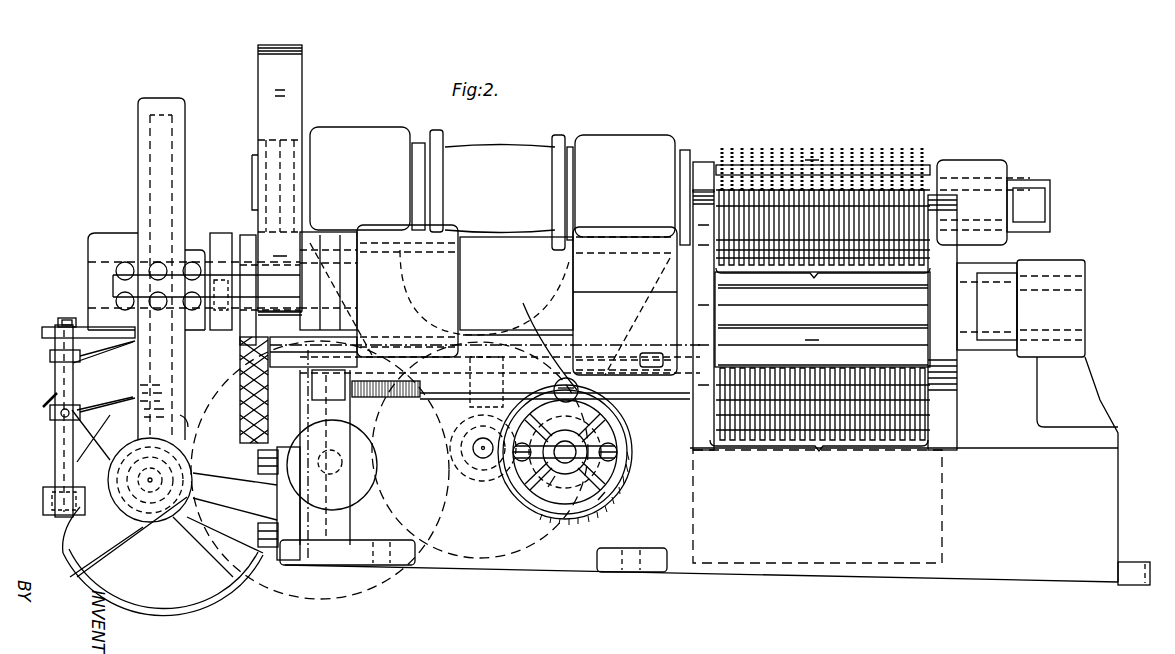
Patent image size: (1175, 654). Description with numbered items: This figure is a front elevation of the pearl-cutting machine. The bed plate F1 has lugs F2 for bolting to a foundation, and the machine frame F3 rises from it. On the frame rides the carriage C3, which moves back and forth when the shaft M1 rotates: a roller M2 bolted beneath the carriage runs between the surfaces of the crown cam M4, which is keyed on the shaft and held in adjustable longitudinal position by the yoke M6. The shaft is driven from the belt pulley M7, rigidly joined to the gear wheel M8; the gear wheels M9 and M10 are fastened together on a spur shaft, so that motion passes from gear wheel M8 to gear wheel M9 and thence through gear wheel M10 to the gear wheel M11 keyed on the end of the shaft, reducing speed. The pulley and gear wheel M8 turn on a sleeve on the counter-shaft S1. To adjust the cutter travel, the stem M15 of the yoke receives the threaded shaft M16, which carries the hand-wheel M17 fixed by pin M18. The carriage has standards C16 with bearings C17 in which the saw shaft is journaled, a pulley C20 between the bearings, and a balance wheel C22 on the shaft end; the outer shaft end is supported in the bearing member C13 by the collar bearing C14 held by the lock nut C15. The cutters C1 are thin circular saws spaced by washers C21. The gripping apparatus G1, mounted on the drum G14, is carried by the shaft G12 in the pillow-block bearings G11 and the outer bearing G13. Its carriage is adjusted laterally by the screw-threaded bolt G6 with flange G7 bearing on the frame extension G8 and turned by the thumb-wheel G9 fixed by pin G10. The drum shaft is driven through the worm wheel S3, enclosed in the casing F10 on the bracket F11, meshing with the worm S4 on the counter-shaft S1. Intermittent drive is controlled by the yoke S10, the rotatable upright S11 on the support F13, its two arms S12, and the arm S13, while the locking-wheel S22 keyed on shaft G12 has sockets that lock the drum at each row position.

The casing F10 is at (138, 108).
The worm wheel S3 is at (160, 146).
The yoke S10 is at (176, 410).
The arm S13 is at (80, 322).
The locking-wheel S22 is at (219, 236).
The shaft G12 is at (246, 238).
The balance wheel C22 is at (271, 180).
The bearing C17 is at (346, 136).
The pulley C20 is at (491, 150).
The bearings G11 is at (517, 300).
The standards C16 is at (405, 281).
The carriage C3 is at (523, 303).
The drum G14 is at (885, 306).
The cutters C1 is at (758, 150).
The washers C21 is at (811, 168).
The gripping apparatus G1 is at (820, 371).
The bearing member C13 is at (994, 162).
The collar bearing C14 is at (1000, 185).
The lock nut C15 is at (1036, 190).
The bearing G13 is at (1068, 268).
The machine frame F3 is at (1100, 498).
The bed plate F1 is at (751, 564).
The lugs F2 is at (370, 566).
The rotatable upright S11 is at (58, 440).
The arms S12 is at (113, 398).
The support F13 is at (80, 507).
The worm S4 is at (140, 478).
The counter-shaft S1 is at (150, 482).
The gear wheel M8 is at (166, 537).
The pulley M7 is at (143, 615).
The bracket F11 is at (235, 496).
The thumb-wheel G9 is at (253, 433).
The pin G10 is at (259, 461).
The gear wheel M10 is at (357, 502).
The gear wheel M9 is at (293, 598).
The extension G8 is at (306, 388).
The flange G7 is at (350, 403).
The roller M2 is at (487, 417).
The screw-threaded bolt G6 is at (395, 417).
The shaft M1 is at (478, 449).
The crown cam M4 is at (463, 462).
The yoke M6 is at (524, 486).
The stem M15 is at (634, 460).
The shaft M16 is at (635, 447).
The gear wheel M11 is at (572, 518).
The pin M18 is at (550, 487).
The hand-wheel M17 is at (600, 500).